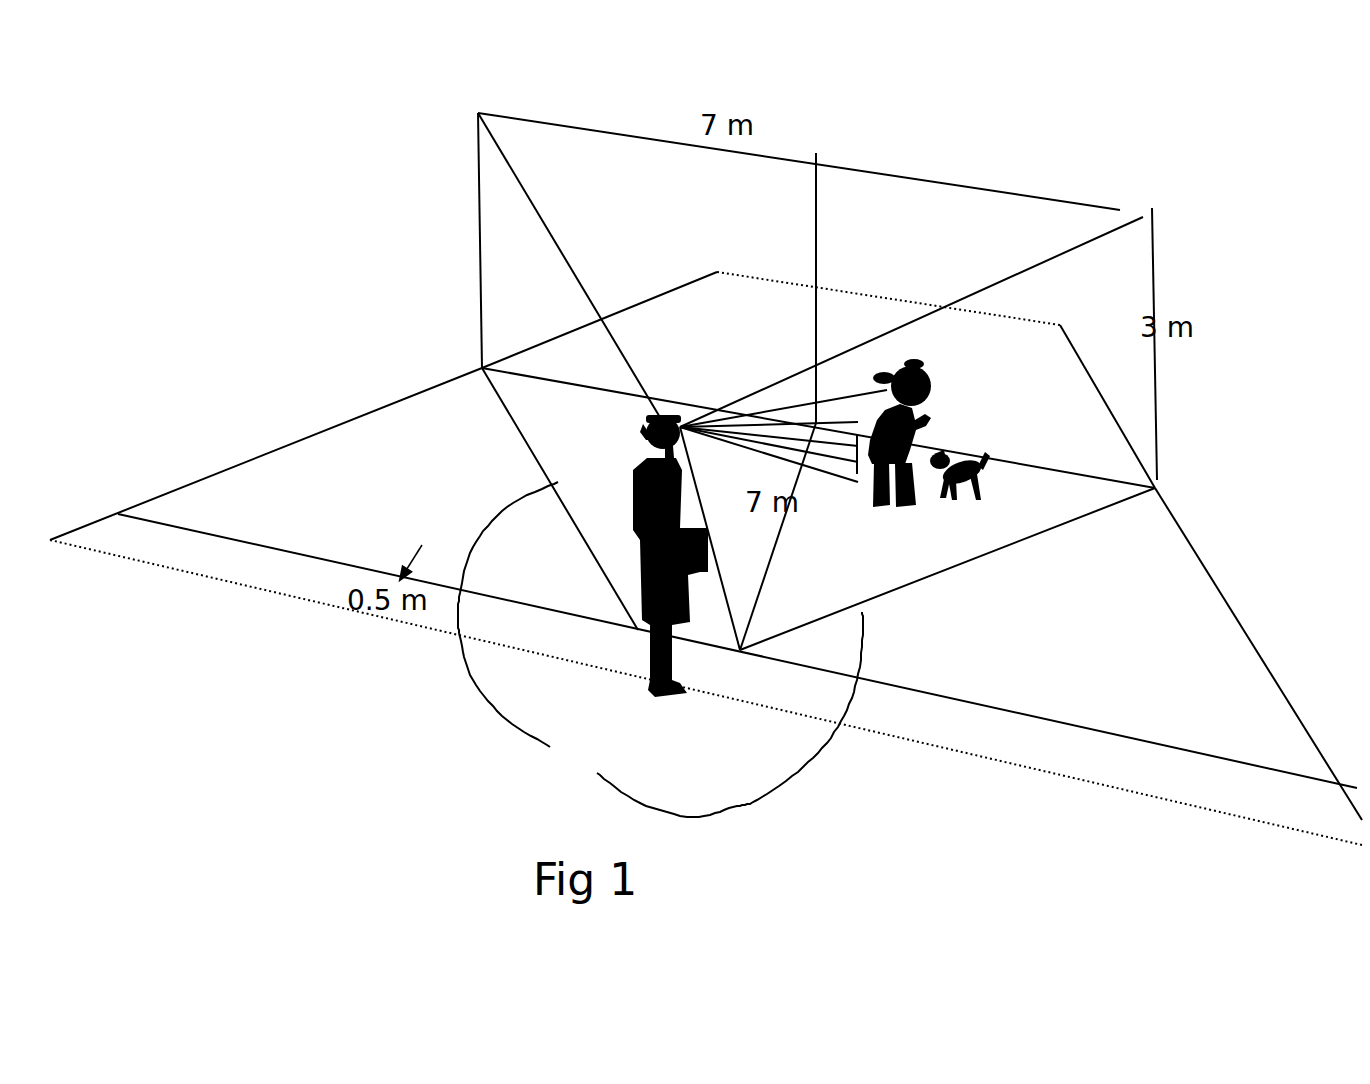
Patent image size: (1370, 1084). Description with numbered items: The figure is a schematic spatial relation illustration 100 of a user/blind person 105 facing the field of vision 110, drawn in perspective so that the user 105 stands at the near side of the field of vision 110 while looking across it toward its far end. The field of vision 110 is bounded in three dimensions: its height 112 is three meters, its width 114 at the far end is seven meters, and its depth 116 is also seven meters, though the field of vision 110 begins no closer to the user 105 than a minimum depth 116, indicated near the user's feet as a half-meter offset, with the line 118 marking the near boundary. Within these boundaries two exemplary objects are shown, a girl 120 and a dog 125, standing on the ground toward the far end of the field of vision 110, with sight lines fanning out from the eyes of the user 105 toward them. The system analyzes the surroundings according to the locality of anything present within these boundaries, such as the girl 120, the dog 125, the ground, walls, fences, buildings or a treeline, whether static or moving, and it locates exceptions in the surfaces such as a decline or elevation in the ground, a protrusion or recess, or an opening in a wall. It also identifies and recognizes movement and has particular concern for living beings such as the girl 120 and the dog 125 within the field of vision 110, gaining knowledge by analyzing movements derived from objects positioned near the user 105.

The schematic spatial relation illustration 100 is at (1213, 194).
The user/blind person 105 is at (584, 470).
The field of vision 110 is at (660, 649).
The height 112 is at (1158, 360).
The width 114 is at (885, 162).
The depth 116 is at (763, 525).
The boundary line 118 is at (369, 638).
The girl 120 is at (947, 524).
The dog 125 is at (1031, 506).